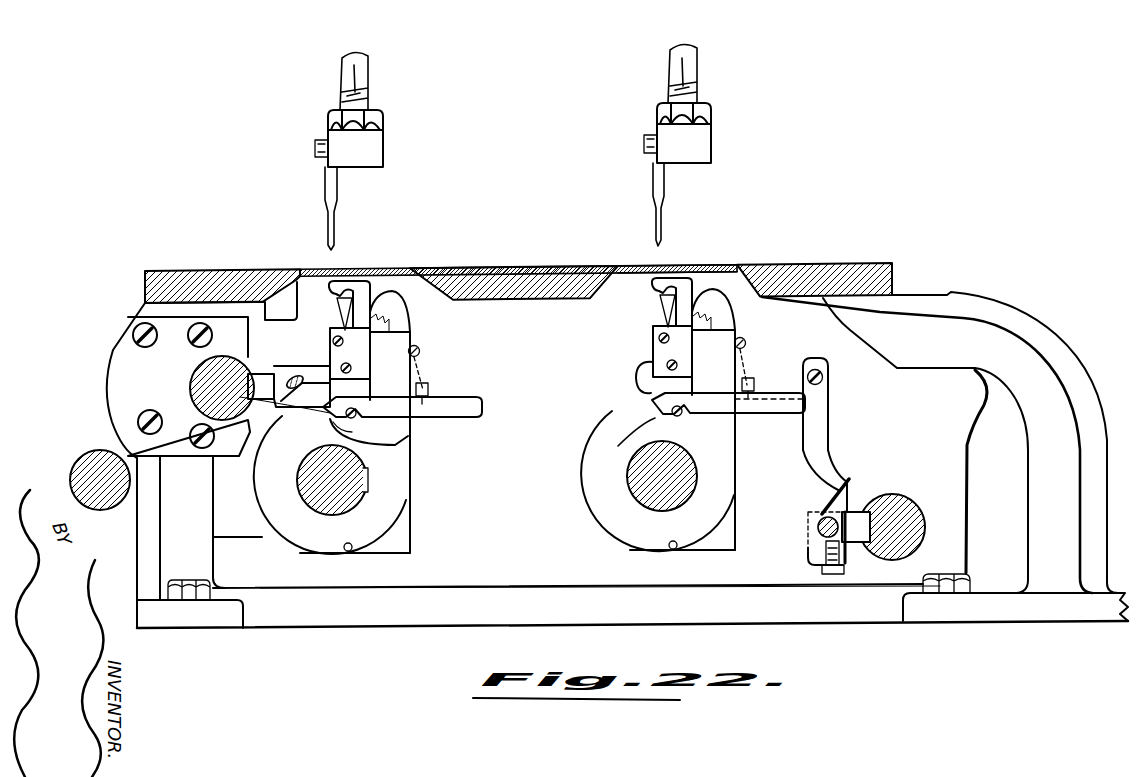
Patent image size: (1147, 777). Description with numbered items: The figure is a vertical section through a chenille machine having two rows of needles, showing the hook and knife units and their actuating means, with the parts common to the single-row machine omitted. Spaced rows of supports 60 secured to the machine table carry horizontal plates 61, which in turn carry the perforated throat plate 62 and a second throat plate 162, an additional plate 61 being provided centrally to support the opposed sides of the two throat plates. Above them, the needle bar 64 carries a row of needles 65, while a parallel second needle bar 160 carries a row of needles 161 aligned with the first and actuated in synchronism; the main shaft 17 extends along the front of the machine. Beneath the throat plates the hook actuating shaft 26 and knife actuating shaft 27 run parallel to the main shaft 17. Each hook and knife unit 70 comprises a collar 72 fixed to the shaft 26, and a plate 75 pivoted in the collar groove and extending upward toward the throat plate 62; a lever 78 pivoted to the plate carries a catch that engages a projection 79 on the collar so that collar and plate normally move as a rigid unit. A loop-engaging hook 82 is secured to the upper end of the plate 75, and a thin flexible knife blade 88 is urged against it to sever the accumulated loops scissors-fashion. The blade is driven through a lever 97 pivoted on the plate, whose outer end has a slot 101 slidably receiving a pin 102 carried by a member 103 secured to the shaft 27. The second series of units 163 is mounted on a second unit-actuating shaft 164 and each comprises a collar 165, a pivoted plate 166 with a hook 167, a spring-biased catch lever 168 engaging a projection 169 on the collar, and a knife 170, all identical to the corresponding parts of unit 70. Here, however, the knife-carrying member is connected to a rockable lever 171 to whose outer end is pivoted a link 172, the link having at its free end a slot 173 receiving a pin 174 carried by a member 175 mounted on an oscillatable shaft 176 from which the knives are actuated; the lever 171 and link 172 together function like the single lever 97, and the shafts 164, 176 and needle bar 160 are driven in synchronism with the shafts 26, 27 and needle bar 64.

The main shaft 17 is at (82, 466).
The hook actuating shaft 26 is at (323, 512).
The knife actuating shaft 27 is at (192, 376).
The supports 60 is at (1023, 366).
The horizontal plates 61 is at (180, 271).
The throat plate 62 is at (283, 270).
The needle bar 64 is at (370, 150).
The needles 65 is at (330, 215).
The hook and knife unit 70 is at (420, 478).
The collar 72 is at (393, 512).
The plate 75 is at (393, 349).
The catch lever 78 is at (470, 401).
The projection 79 is at (410, 446).
The loop-engaging hook 82 is at (362, 312).
The knife blade 88 is at (350, 293).
The lever 97 is at (306, 410).
The slot 101 is at (300, 377).
The pin 102 is at (290, 370).
The member 103 is at (262, 387).
The second needle bar 160 is at (700, 142).
The needles 161 is at (655, 214).
The second throat plate 162 is at (740, 272).
The second hook and knife unit 163 is at (750, 434).
The second unit-actuating shaft 164 is at (648, 505).
The collar 165 is at (605, 503).
The pivoted plate 166 is at (717, 342).
The hook 167 is at (672, 280).
The spring-biased catch lever 168 is at (806, 404).
The projection 169 is at (643, 406).
The knife 170 is at (670, 298).
The rockable lever 171 is at (768, 370).
The link 172 is at (822, 447).
The slot 173 is at (840, 491).
The pin 174 is at (826, 542).
The member 175 is at (866, 556).
The oscillatable shaft 176 is at (893, 560).